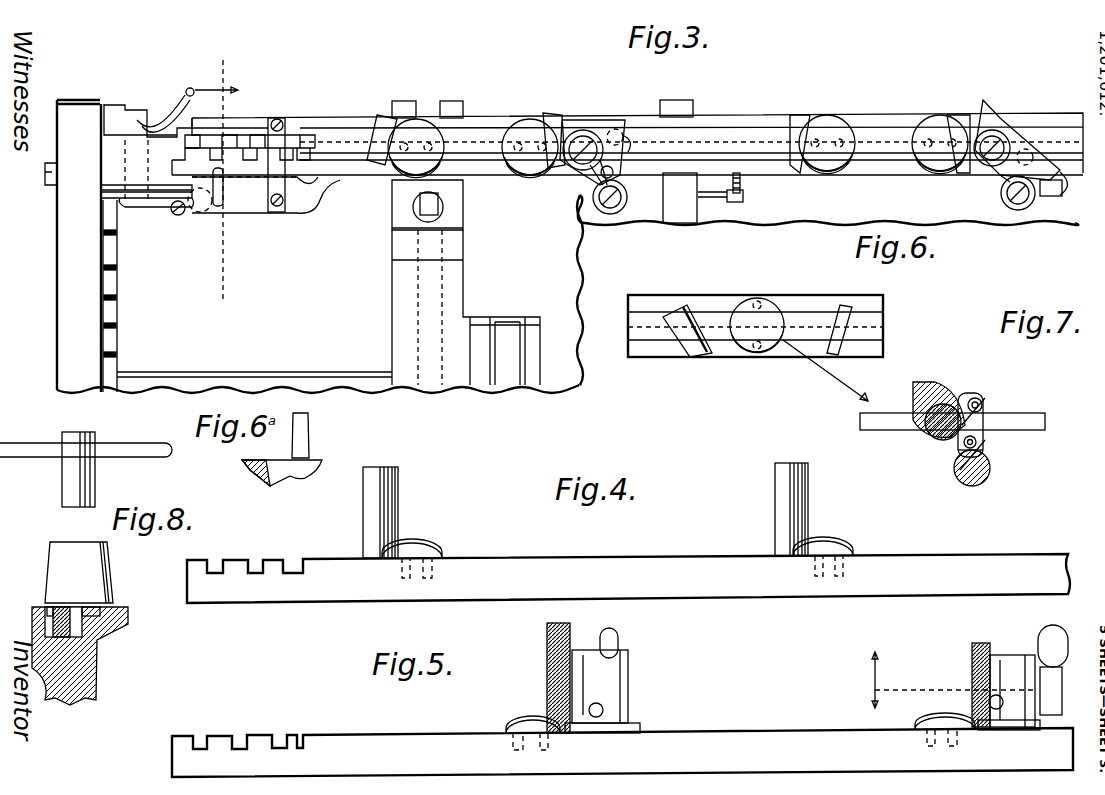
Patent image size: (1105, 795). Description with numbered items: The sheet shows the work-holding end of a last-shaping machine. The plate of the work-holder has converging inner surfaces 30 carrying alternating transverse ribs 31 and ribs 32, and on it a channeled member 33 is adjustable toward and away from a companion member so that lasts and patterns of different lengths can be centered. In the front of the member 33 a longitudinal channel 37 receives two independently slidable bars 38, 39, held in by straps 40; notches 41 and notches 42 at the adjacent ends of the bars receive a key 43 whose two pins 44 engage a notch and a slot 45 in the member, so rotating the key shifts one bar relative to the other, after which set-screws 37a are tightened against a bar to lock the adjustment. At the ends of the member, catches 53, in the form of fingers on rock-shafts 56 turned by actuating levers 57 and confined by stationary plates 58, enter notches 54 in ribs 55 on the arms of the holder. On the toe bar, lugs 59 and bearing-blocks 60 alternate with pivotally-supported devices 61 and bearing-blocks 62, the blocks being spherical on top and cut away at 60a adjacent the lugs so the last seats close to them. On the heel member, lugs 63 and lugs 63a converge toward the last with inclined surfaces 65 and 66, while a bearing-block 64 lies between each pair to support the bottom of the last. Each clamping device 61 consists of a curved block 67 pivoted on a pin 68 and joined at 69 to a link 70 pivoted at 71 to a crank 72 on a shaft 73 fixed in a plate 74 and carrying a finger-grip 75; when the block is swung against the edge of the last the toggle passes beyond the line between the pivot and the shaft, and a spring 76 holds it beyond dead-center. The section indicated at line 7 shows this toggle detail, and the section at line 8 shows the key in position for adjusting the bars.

In FIG. 5, the section line 7 is at (941, 680).
In FIG. 3, the section line 8 is at (216, 65).
In FIG. 3, the converging surfaces 30 is at (567, 246).
In FIG. 3, the ribs 31 is at (455, 290).
In FIG. 3, the ribs 32 is at (668, 210).
In FIG. 3, the channeled member 33 is at (742, 118).
In FIG. 8, the channeled member 33 is at (95, 690).
In FIG. 8, the channel 37 is at (75, 637).
In FIG. 3, the set-screws 37a is at (785, 203).
In FIG. 3, the bar 38 is at (340, 135).
In FIG. 6, the bar 38 is at (795, 305).
In FIG. 8, the bar 38 is at (35, 635).
In FIG. 4, the bar 38 is at (658, 557).
In FIG. 3, the bar 39 is at (345, 175).
In FIG. 6, the bar 39 is at (795, 345).
In FIG. 7, the bar 39 is at (1040, 420).
In FIG. 8, the bar 39 is at (95, 640).
In FIG. 5, the bar 39 is at (450, 745).
In FIG. 3, the straps 40 is at (278, 208).
In FIG. 3, the notches 41 is at (305, 138).
In FIG. 8, the notches 41 is at (60, 605).
In FIG. 4, the notches 41 is at (305, 560).
In FIG. 3, the notches 42 is at (240, 155).
In FIG. 5, the notches 42 is at (280, 742).
In FIG. 8, the key 43 is at (75, 548).
In FIG. 8, the pins 44 is at (52, 605).
In FIG. 3, the slot 45 is at (220, 208).
In FIG. 8, the slot 45 is at (118, 612).
In FIG. 3, the catches 53 is at (105, 190).
In FIG. 3, the notches 54 is at (102, 325).
In FIG. 3, the ribs 55 is at (118, 290).
In FIG. 3, the rock-shafts 56 is at (138, 118).
In FIG. 3, the actuating levers 57 is at (190, 88).
In FIG. 3, the stationary plates 58 is at (170, 205).
In FIG. 3, the lugs 59 is at (373, 170).
In FIG. 4, the lugs 59 is at (390, 505).
In FIG. 3, the bearing-blocks 60 is at (420, 135).
In FIG. 4, the bearing-blocks 60 is at (425, 548).
In FIG. 3, the cut-away portion 60a is at (583, 81).
In FIG. 3, the pivotally-supported devices 61 is at (575, 125).
In FIG. 7, the pivotally-supported devices 61 is at (966, 408).
In FIG. 5, the pivotally-supported devices 61 is at (807, 673).
In FIG. 5, the bearing-blocks 62 is at (525, 720).
In FIG. 6, the lugs 63 is at (835, 350).
In FIG. 6, the lugs 63a is at (680, 350).
In FIG. 6, the bearing-blocks 64 is at (755, 340).
In FIG. 6, the inclined surface 65 is at (690, 325).
In FIG. 6, the inclined surface 66 is at (675, 315).
In FIG. 7, the block 67 is at (928, 385).
In FIG. 7, the pin 68 is at (938, 430).
In FIG. 7, the pivotal connection 69 is at (978, 403).
In FIG. 7, the link 70 is at (975, 418).
In FIG. 7, the pivot 71 is at (980, 442).
In FIG. 7, the crank 72 is at (980, 452).
In FIG. 3, the shaft 73 is at (610, 212).
In FIG. 7, the shaft 73 is at (980, 478).
In FIG. 7, the plate 74 is at (955, 455).
In FIG. 3, the finger-grip 75 is at (628, 152).
In FIG. 3, the spring 76 is at (595, 170).
In FIG. 5, the spring 76 is at (597, 718).